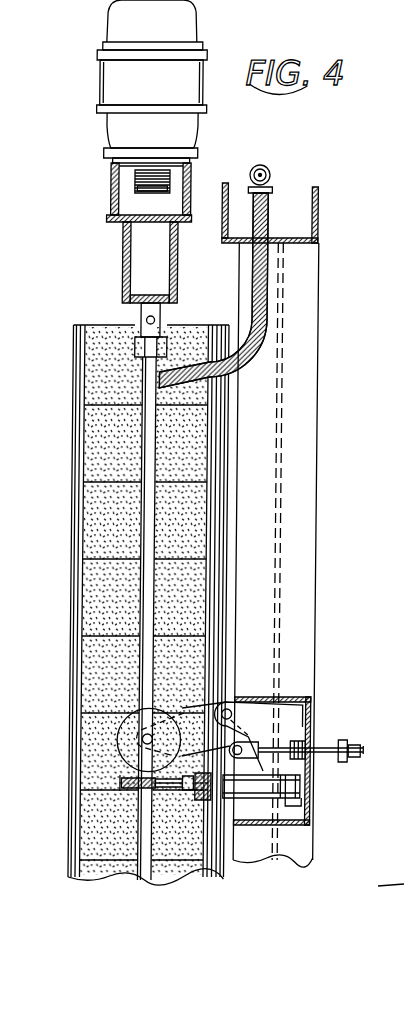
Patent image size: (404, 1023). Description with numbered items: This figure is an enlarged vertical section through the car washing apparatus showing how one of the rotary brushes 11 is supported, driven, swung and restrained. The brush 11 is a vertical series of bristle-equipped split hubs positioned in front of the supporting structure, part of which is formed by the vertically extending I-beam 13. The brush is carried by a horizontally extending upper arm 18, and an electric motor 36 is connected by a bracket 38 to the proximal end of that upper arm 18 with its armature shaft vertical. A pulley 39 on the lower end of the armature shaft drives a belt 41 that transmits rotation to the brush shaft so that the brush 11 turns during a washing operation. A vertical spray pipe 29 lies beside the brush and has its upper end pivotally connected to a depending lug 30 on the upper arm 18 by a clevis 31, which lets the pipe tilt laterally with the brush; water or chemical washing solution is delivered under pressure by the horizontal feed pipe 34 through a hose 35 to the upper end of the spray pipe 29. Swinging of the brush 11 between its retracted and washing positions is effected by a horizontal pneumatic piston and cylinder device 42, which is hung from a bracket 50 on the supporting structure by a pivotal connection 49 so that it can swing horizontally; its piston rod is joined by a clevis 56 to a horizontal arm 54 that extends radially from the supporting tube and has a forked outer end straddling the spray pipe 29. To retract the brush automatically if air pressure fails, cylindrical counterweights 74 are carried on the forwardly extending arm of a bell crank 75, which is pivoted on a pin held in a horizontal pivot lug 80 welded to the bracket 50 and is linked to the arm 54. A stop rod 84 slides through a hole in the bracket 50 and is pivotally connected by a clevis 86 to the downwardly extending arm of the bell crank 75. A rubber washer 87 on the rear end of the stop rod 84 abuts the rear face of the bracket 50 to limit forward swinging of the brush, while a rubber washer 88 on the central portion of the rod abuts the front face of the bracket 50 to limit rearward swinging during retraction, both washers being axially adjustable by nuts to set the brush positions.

The brush 11 is at (77, 505).
The I-beam 13 is at (312, 447).
The upper arm 18 is at (122, 272).
The spray pipe 29 is at (143, 440).
The depending lug 30 is at (141, 311).
The clevis 31 is at (139, 326).
The feed pipe 34 is at (271, 176).
The hose 35 is at (268, 297).
The electric motor 36 is at (97, 84).
The bracket 38 is at (111, 198).
The pulley 39 is at (134, 177).
The belt 41 is at (134, 186).
The piston and cylinder device 42 is at (292, 801).
The pivotal connection 49 is at (304, 791).
The bracket 50 is at (315, 713).
The arm 54 is at (127, 785).
The clevis 56 is at (193, 793).
The counterweight 74 is at (125, 752).
The bell crank 75 is at (200, 744).
The pivot lug 80 is at (294, 704).
The stop rod 84 is at (325, 757).
The clevis 86 is at (233, 750).
The rubber washer 87 is at (348, 743).
The rubber washer 88 is at (307, 745).